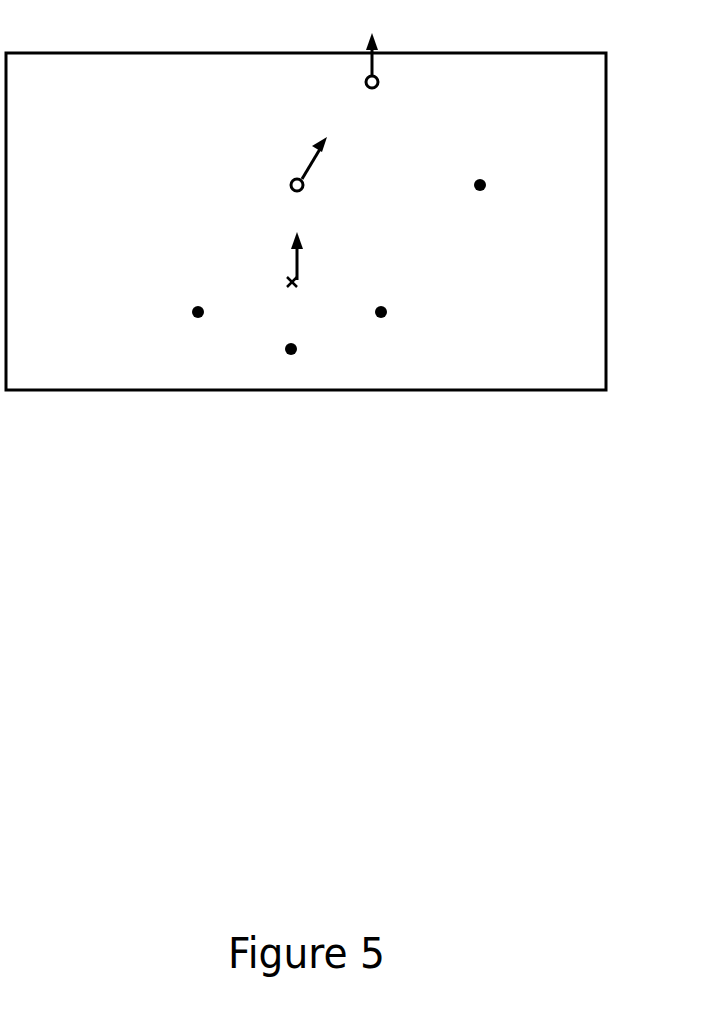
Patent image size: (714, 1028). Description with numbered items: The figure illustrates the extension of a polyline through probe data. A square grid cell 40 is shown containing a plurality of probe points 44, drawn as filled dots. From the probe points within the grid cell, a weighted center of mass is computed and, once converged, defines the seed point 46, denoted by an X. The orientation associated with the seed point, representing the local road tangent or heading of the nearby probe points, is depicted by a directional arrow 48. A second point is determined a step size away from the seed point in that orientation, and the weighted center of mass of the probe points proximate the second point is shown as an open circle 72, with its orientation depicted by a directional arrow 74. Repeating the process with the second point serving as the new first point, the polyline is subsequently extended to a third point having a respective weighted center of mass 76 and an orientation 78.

The grid cell 40 is at (370, 242).
The probe point 44 is at (347, 221).
The seed point 46 is at (336, 256).
The directional arrow 48 is at (254, 247).
The open circle 72 is at (256, 156).
The directional arrow 74 is at (348, 178).
The weighted center of mass 76 is at (412, 110).
The orientation 78 is at (424, 39).